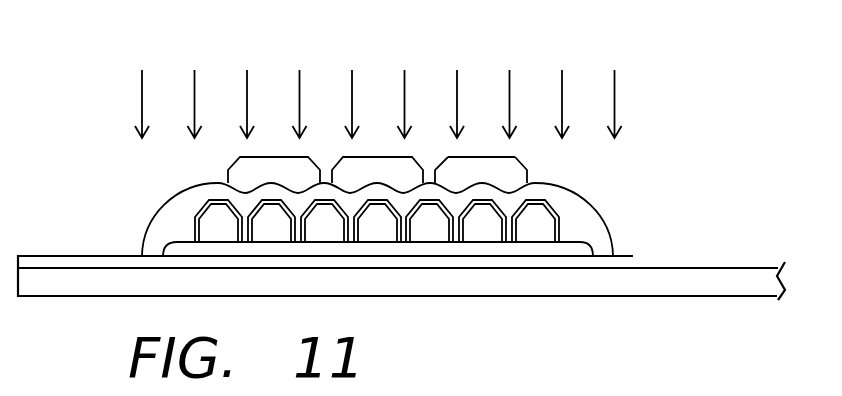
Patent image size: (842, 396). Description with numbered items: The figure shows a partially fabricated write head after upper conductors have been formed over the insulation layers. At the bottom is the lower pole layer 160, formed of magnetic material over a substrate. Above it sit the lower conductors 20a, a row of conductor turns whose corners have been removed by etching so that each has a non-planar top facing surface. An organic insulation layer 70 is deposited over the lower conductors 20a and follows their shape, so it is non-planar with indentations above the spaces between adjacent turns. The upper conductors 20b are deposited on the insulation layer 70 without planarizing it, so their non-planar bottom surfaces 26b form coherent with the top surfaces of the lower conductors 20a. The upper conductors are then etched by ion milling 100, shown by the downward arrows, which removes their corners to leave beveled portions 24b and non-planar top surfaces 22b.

The ion milling 100 is at (139, 106).
The lower pole layer 160 is at (751, 277).
The lower conductors 20a is at (533, 223).
The insulation layer 70 is at (173, 228).
The non-planar bottom surfaces 26b is at (485, 185).
The facets or beveled portions 24b is at (335, 169).
The upper conductors 20b is at (505, 172).
The non-planar top surfaces 22b is at (493, 158).